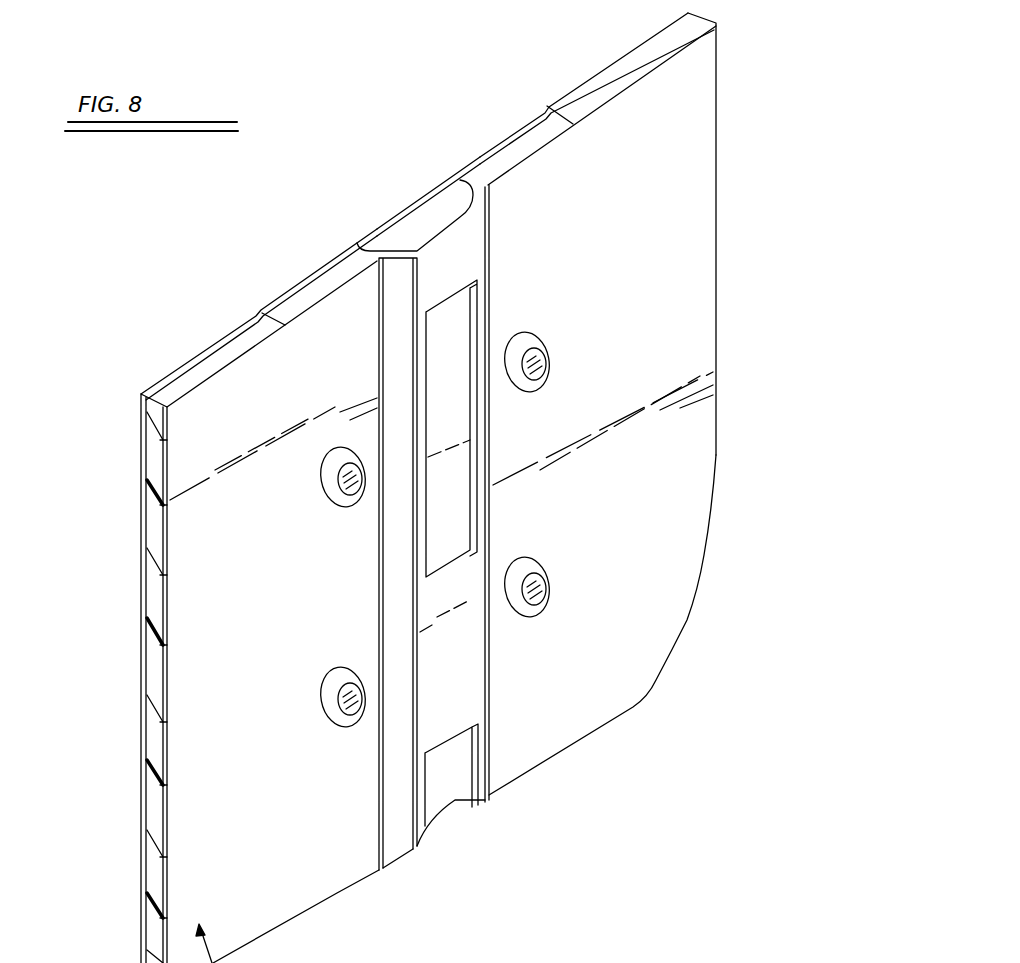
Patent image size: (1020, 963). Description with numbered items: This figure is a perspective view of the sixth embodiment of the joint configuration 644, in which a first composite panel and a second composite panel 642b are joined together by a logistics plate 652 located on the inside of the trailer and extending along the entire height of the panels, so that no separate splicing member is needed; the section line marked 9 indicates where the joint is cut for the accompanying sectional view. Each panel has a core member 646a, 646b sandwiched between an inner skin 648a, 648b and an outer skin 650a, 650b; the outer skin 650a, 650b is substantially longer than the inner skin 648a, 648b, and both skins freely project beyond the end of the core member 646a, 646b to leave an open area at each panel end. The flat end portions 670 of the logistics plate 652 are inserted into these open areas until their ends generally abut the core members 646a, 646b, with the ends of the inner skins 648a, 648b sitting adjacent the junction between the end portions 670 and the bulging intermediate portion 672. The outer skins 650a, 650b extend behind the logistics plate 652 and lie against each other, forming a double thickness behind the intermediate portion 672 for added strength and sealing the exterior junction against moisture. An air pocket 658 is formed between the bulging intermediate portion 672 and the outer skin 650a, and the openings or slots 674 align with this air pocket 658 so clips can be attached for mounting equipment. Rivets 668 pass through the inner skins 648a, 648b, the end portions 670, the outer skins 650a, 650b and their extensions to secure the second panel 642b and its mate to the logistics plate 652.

The second composite panel 642b is at (610, 684).
The joint configuration 644 is at (407, 192).
The core member 646a is at (150, 624).
The core member 646b is at (698, 22).
The inner skin 648a is at (167, 682).
The inner skin 648b is at (650, 74).
The outer skin 650a is at (172, 372).
The outer skin 650b is at (614, 64).
The logistics plate 652 is at (397, 826).
The air pocket 658 is at (404, 230).
The rivets 668 is at (527, 342).
The flat end portions 670 is at (290, 307).
The bulging intermediate portion 672 is at (472, 687).
The openings or slots 674 is at (468, 519).
The section line 9- 9 is at (735, 113).